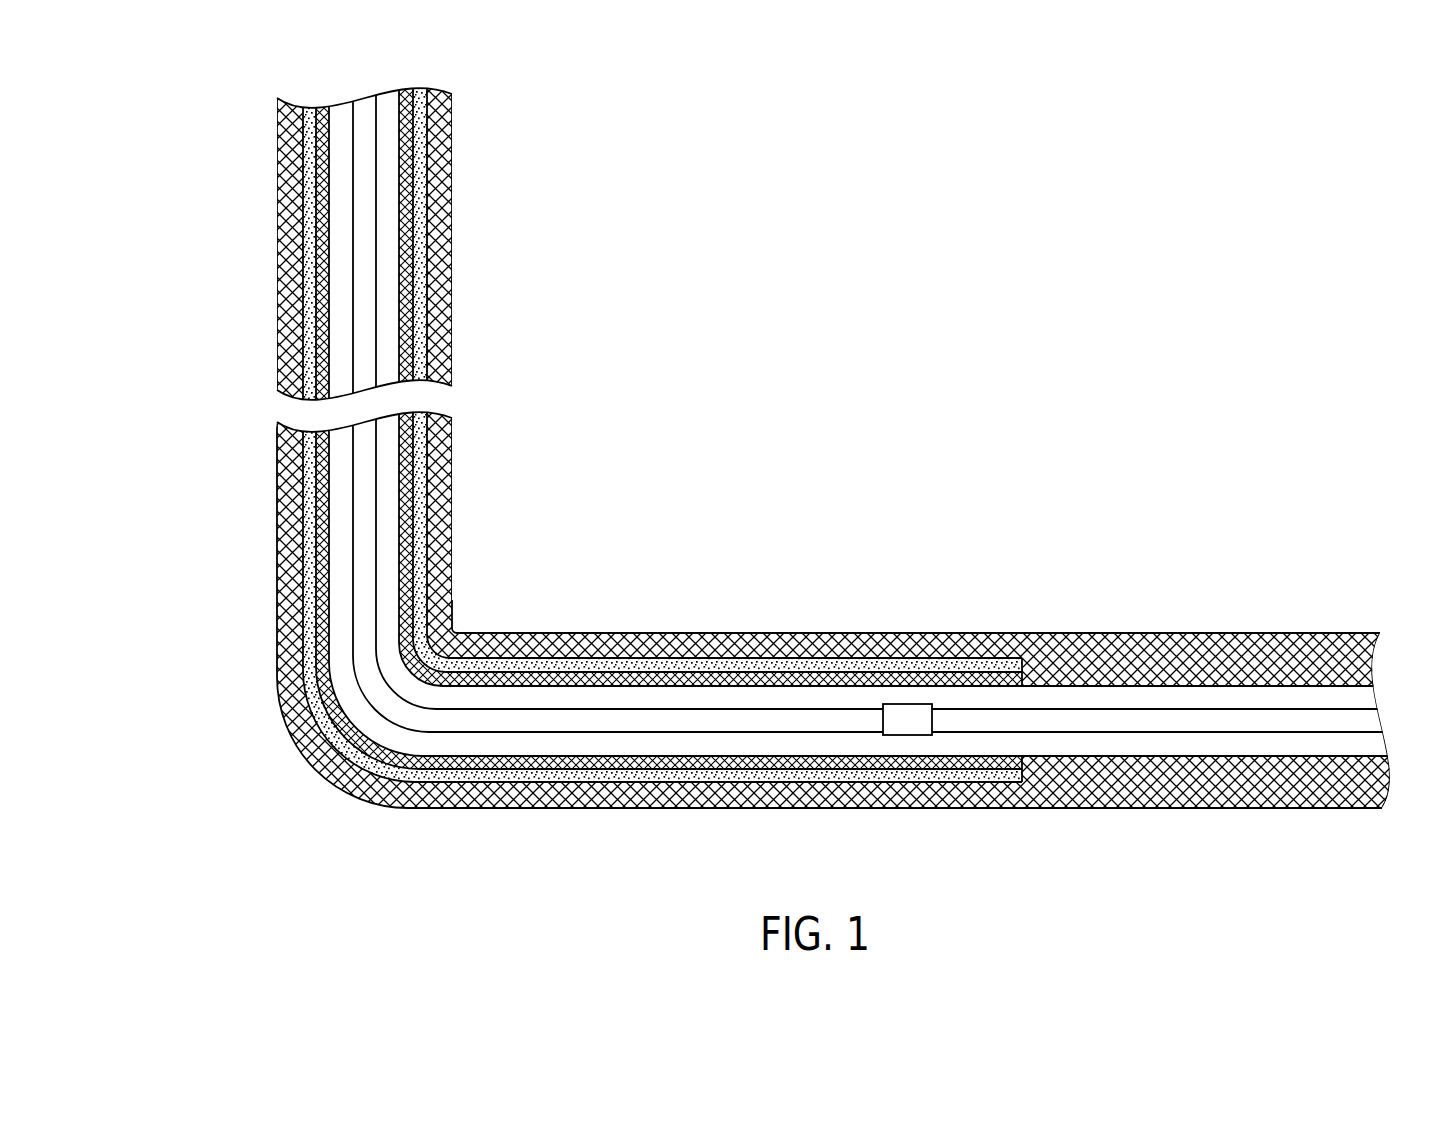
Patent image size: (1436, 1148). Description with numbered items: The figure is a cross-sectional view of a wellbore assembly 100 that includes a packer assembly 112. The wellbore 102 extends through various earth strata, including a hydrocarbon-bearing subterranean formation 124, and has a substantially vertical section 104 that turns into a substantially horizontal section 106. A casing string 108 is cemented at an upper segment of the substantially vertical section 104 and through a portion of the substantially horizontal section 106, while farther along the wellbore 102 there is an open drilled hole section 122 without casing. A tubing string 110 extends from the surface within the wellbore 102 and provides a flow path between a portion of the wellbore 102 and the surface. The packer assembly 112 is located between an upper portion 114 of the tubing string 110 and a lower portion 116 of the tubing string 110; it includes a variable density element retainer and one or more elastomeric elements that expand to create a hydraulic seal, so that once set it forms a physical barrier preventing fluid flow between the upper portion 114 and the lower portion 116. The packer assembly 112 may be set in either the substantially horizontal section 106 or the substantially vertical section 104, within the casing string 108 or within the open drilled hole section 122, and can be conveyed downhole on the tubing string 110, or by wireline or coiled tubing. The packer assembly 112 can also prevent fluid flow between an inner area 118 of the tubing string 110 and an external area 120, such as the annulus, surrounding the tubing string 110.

The wellbore assembly 100 is at (240, 130).
The wellbore 102 is at (403, 568).
The substantially vertical section 104 is at (405, 480).
The substantially horizontal section 106 is at (722, 678).
The casing string 108 is at (432, 218).
The tubing string 110 is at (378, 620).
The packer assembly 112 is at (908, 724).
The upper portion 114 is at (780, 733).
The lower portion 116 is at (1065, 722).
The inner area 118 is at (1165, 718).
The external area 120 is at (1093, 695).
The open drilled hole section 122 is at (1215, 743).
The hydrocarbon-bearing subterranean formation 124 is at (1303, 630).